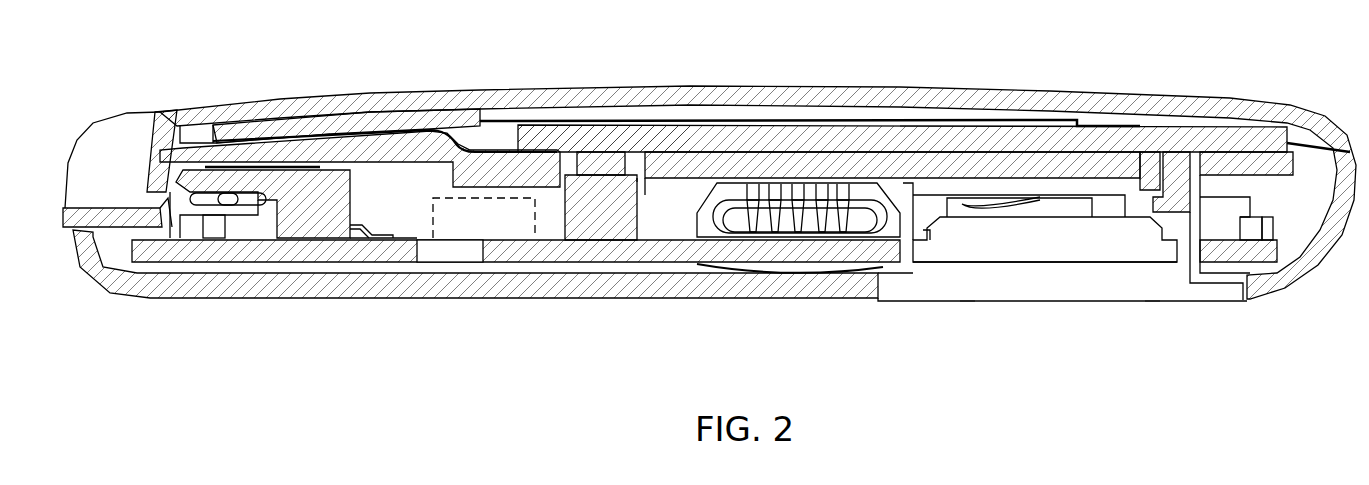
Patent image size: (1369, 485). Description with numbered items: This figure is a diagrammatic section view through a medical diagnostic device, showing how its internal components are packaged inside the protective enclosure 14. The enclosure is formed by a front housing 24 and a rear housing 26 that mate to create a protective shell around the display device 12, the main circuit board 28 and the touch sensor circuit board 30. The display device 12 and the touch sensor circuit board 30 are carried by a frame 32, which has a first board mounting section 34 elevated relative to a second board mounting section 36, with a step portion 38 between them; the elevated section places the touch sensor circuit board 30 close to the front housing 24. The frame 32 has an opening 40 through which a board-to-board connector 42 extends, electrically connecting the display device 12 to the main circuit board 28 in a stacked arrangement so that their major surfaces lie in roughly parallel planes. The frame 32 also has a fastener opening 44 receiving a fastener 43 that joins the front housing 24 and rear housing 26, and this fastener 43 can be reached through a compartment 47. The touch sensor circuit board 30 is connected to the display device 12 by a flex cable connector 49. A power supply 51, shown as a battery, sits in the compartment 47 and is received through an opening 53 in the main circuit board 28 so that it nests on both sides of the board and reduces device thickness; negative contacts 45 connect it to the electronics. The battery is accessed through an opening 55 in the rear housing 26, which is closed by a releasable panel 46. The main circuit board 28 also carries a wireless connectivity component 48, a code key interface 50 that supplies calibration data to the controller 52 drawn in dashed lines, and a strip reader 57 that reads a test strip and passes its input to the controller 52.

The display device 12 is at (807, 137).
The protective enclosure 14 is at (413, 217).
The front housing 24 is at (917, 93).
The rear housing 26 is at (733, 293).
The main circuit board 28 is at (355, 250).
The touch sensor circuit board 30 is at (392, 118).
The frame 32 is at (670, 170).
The first board mounting section 34 is at (320, 138).
The second board mounting section 36 is at (1028, 137).
The step portion 38 is at (460, 137).
The opening 40 is at (655, 150).
The board-to-board connector 42 is at (597, 140).
The fastener 43 is at (1173, 160).
The fastener opening 44 is at (1207, 165).
The negative contacts 45 is at (1038, 208).
The panel 46 is at (990, 302).
The compartment 47 is at (1153, 302).
The wireless connectivity component 48 is at (1225, 225).
The flex cable connector 49 is at (537, 140).
The code key interface 50 is at (810, 220).
The power supply 51 is at (1110, 253).
The controller 52 is at (512, 225).
The opening 53 is at (907, 253).
The opening 55 is at (967, 302).
The strip reader 57 is at (300, 235).